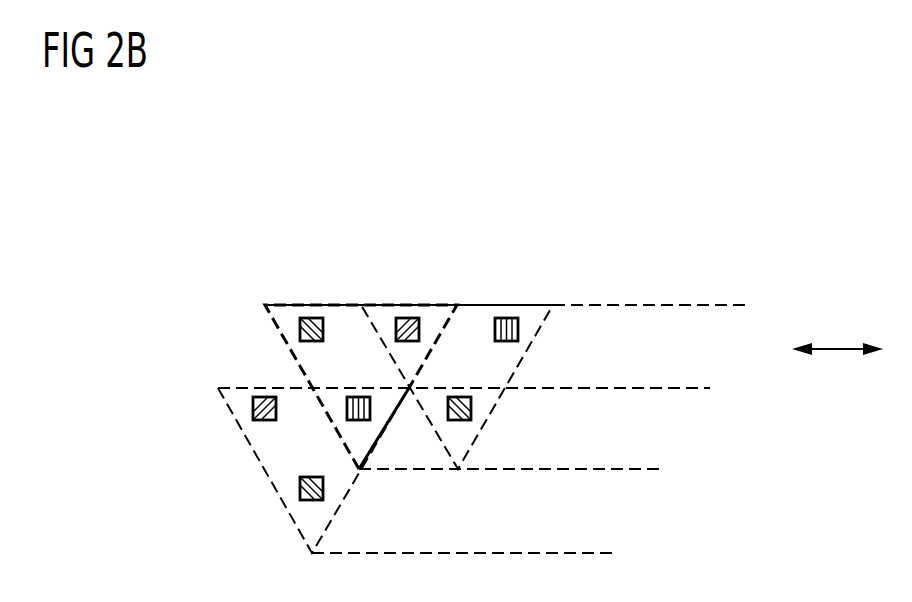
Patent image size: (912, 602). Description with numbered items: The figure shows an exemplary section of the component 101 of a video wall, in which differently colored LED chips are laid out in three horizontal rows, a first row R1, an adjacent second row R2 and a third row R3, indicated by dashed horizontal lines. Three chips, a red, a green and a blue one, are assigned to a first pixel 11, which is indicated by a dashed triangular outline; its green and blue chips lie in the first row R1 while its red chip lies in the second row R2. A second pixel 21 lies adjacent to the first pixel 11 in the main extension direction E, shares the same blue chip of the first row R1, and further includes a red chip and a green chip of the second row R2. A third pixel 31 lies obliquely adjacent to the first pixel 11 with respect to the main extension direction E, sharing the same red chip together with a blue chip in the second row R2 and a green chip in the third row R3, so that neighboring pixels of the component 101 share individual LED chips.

The component 101 is at (716, 182).
The first pixel 11 is at (358, 322).
The second pixel 21 is at (470, 332).
The third pixel 31 is at (270, 457).
The main extension direction E is at (838, 349).
The first row R1 is at (742, 362).
The second row R2 is at (697, 445).
The third row R3 is at (648, 527).